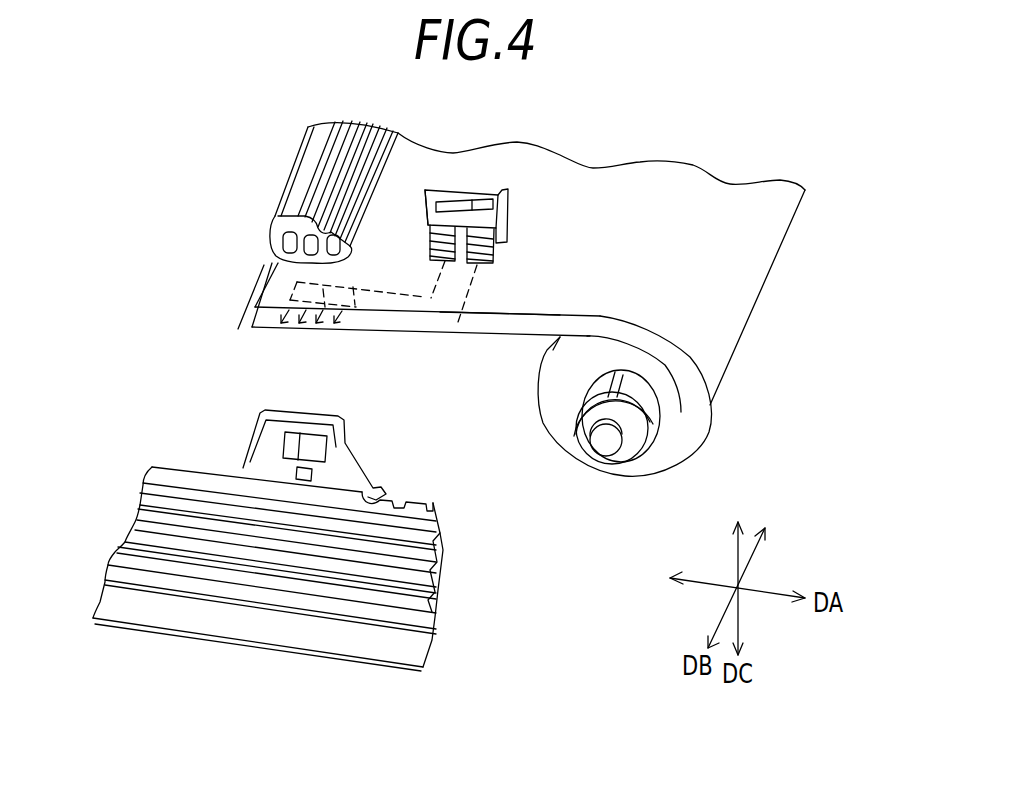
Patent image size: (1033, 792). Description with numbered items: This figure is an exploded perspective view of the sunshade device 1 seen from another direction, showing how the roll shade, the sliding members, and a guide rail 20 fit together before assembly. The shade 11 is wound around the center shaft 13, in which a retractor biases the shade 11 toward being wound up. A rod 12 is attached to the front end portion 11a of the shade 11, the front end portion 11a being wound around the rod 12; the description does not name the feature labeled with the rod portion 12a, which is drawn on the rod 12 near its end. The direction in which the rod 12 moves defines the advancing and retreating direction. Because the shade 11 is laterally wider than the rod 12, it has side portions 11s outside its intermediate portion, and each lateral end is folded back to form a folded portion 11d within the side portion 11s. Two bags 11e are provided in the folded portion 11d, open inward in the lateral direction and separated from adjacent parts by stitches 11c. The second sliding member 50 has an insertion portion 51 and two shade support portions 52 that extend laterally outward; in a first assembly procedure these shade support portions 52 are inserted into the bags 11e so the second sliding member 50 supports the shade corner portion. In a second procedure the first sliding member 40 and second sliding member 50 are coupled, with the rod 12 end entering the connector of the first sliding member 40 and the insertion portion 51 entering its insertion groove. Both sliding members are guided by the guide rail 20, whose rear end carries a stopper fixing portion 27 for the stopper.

The sunshade device 1 is at (723, 122).
The shade 11 is at (728, 330).
The front end portion 11a is at (335, 132).
The stitches 11c is at (295, 330).
The folded portion 11d is at (505, 325).
The bags 11e is at (268, 333).
The side portions 11s is at (248, 292).
The rod 12 is at (272, 236).
The ribbed portion 12a is at (380, 130).
The center shaft 13 is at (657, 423).
The guide rail 20 is at (168, 613).
The stopper fixing portion 27 is at (388, 505).
The first sliding member 40 is at (228, 433).
The second sliding member 50 is at (530, 223).
The insertion portion 51 is at (427, 200).
The shade support portion 52 is at (425, 253).